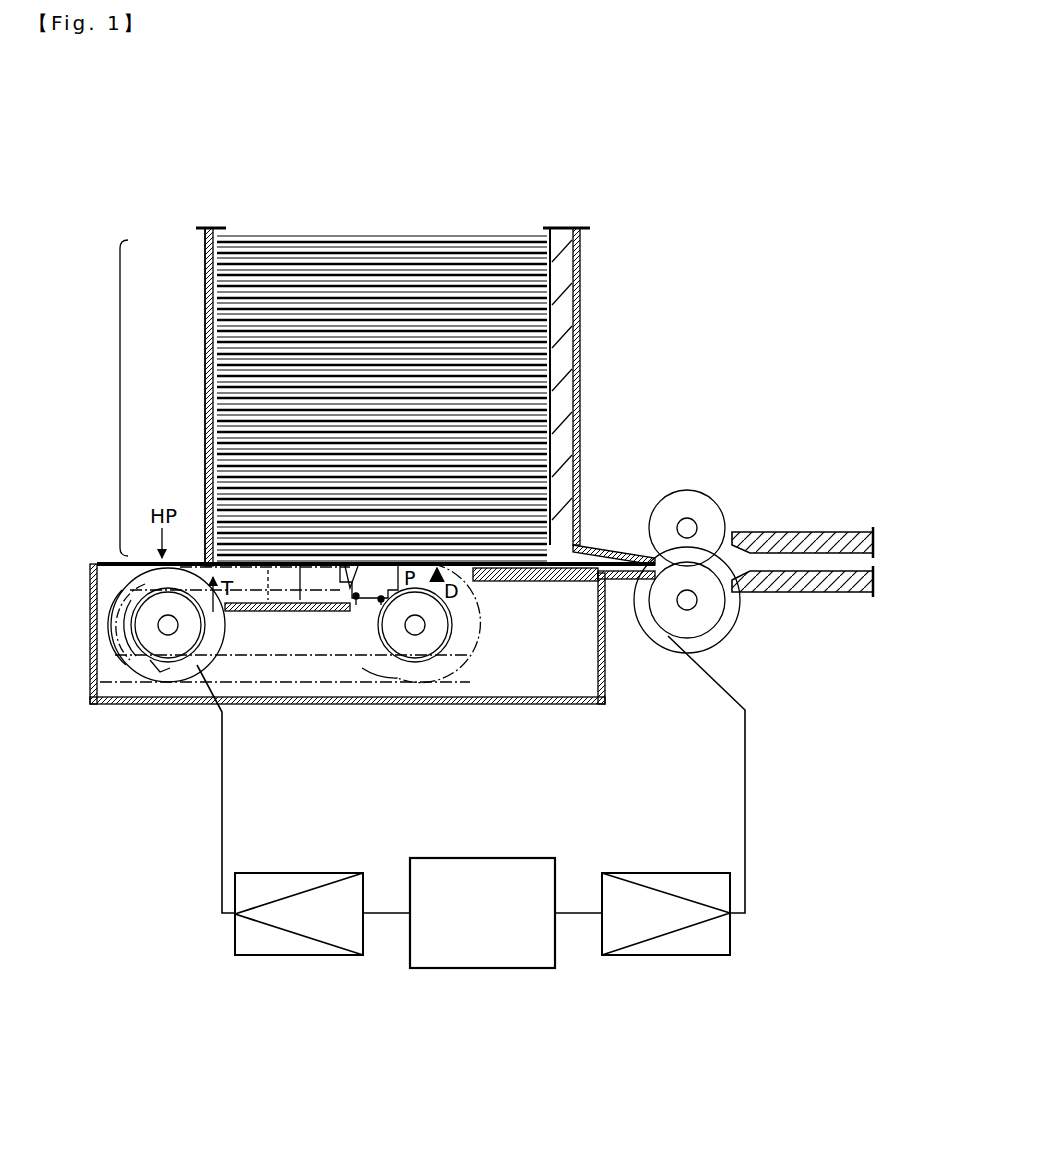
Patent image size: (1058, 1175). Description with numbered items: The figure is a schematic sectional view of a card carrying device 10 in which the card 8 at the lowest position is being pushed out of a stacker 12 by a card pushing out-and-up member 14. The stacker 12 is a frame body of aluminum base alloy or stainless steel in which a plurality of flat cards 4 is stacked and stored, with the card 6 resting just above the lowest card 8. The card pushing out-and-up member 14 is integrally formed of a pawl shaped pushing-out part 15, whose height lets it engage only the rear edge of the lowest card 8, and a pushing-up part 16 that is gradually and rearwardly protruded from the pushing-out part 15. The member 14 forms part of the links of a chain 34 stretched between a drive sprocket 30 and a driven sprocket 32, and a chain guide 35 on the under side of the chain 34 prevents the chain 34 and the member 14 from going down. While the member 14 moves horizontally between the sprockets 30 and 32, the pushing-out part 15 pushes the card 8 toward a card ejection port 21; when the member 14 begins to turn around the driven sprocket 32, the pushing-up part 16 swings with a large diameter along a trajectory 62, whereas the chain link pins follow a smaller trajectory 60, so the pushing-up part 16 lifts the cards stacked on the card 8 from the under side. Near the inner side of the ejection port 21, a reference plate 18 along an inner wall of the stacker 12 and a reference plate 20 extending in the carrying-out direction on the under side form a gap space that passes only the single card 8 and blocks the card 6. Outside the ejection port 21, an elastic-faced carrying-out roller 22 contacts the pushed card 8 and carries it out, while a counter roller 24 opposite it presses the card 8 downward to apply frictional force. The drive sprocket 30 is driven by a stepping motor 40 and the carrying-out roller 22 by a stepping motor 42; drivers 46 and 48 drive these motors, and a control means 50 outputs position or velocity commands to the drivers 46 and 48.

The cards 4 is at (472, 240).
The card just above the lowest card 6 is at (207, 545).
The card at the lowest position 8 is at (526, 583).
The card carrying device 10 is at (684, 236).
The stacker 12 is at (103, 398).
The card pushing out-and-up member 14 is at (402, 640).
The pushing-out part 15 is at (358, 604).
The pushing-up part 16 is at (348, 598).
The reference plate 18 is at (583, 537).
The reference plate 20 is at (572, 583).
The card ejection port 21 is at (657, 578).
The carrying-out roller 22 is at (712, 613).
The counter roller 24 is at (706, 505).
The drive sprocket 30 is at (125, 655).
The driven sprocket 32 is at (452, 646).
The chain 34 is at (275, 660).
The chain guide 35 is at (240, 612).
The stepping motor 40 is at (142, 680).
The stepping motor 42 is at (722, 640).
The driver 46 is at (258, 956).
The driver 48 is at (622, 956).
The control means 50 is at (432, 969).
The trajectory 60 is at (388, 656).
The trajectory 62 is at (456, 684).